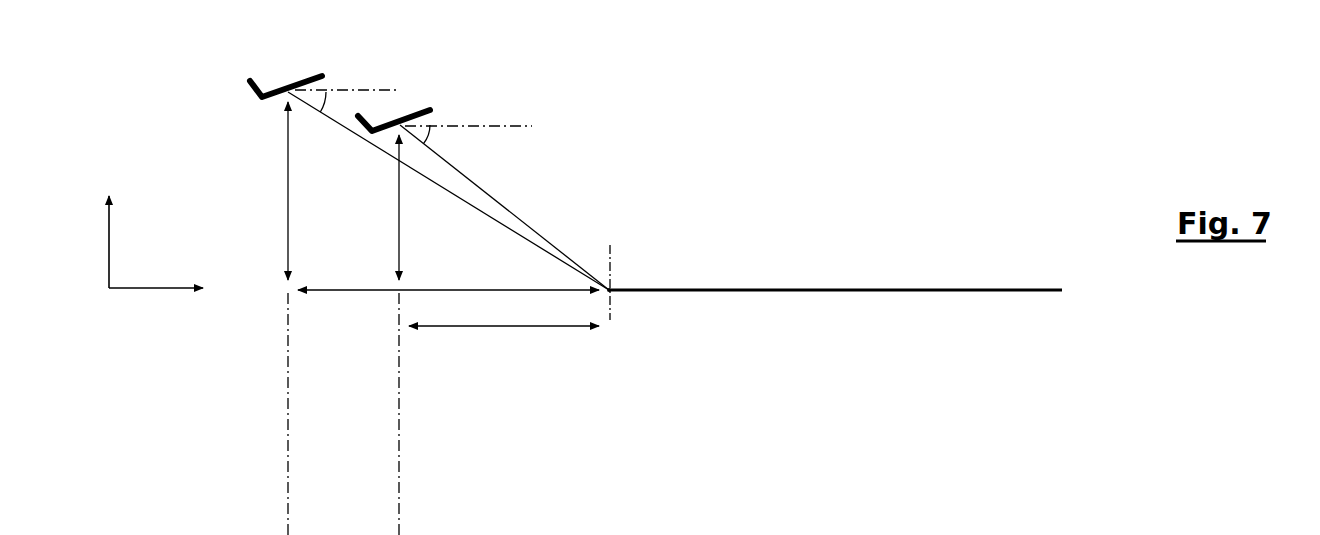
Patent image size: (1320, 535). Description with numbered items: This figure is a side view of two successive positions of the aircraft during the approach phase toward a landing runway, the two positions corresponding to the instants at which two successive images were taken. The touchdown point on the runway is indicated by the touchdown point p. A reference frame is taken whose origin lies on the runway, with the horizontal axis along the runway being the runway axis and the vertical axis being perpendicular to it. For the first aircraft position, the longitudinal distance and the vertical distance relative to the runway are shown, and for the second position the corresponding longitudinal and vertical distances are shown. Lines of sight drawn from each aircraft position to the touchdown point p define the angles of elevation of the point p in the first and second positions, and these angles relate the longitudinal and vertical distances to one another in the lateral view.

The touchdown point p is at (621, 282).